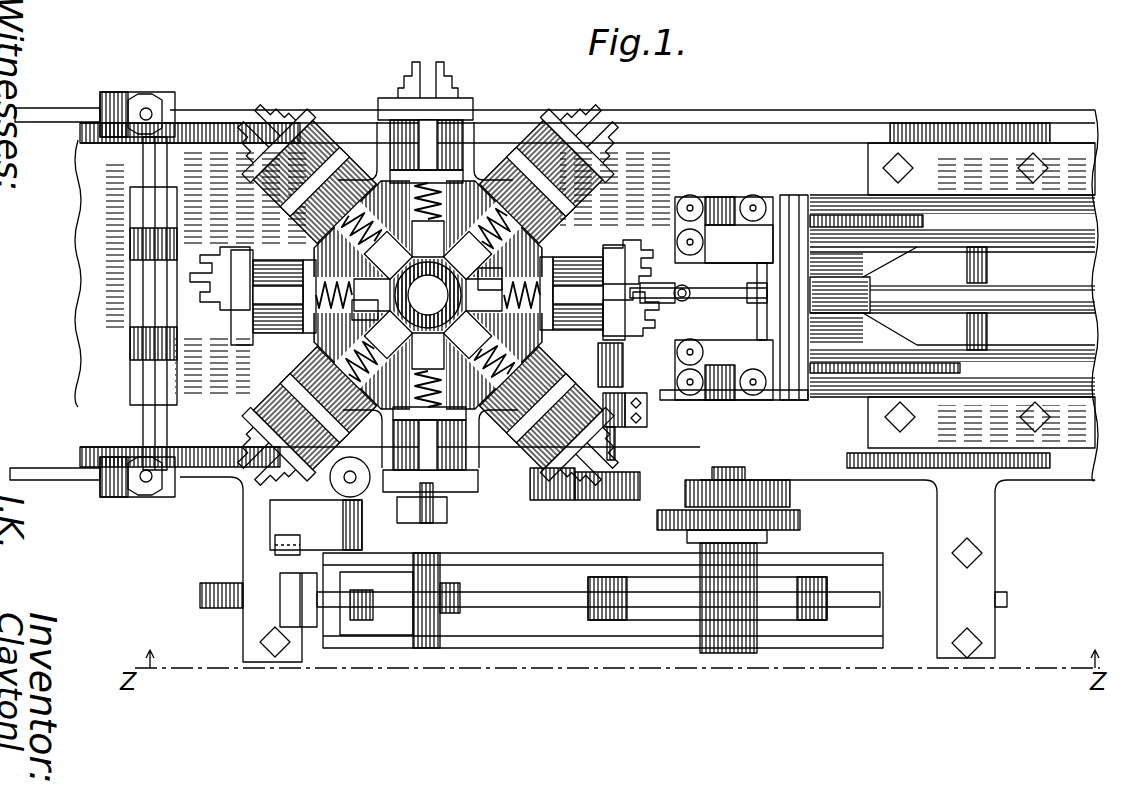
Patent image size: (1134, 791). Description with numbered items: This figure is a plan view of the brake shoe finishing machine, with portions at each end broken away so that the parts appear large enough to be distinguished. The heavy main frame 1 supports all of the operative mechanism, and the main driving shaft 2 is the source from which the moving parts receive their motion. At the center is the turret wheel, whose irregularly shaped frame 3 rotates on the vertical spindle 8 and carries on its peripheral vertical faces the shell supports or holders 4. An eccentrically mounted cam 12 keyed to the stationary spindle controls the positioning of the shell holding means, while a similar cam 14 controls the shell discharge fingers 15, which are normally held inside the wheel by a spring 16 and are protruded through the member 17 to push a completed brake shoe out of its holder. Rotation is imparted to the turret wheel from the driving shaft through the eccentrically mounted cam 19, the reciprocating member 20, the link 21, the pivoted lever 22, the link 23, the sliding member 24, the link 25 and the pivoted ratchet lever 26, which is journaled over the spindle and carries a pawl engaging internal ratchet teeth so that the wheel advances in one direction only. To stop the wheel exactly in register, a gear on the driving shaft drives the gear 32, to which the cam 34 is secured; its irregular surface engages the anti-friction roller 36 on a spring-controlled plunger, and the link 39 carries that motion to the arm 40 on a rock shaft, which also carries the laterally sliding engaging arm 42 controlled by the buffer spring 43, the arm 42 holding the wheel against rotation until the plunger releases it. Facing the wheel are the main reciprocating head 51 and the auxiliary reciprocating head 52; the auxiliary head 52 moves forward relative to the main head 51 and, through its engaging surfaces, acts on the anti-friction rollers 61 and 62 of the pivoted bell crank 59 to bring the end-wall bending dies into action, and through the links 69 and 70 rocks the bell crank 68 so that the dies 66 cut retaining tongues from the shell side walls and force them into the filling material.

The main frame 1 is at (938, 128).
The main driving shaft 2 is at (735, 640).
The turret wheel main frame 3 is at (250, 192).
The shell supports or holders 4 is at (290, 128).
The vertical spindle or axis 8 is at (428, 295).
The eccentrically mounted cam 12 is at (490, 278).
The eccentrically mounted cam 14 is at (445, 335).
The shell discharge fingers 15 is at (262, 295).
The spring 16 is at (420, 392).
The member 17 is at (365, 312).
The eccentrically mounted cam 19 is at (672, 605).
The reciprocating member 20 is at (490, 640).
The link 21 is at (360, 600).
The pivoted lever 22 is at (300, 600).
The link 23 is at (275, 542).
The sliding member 24 is at (362, 486).
The link 25 is at (415, 520).
The pivoted ratchet lever 26 is at (285, 505).
The gear 32 is at (800, 520).
The cam 34 is at (715, 490).
The anti-friction roller 36 is at (710, 472).
The link 39 is at (600, 500).
The arm 40 is at (560, 500).
The engaging arm 42 is at (598, 360).
The buffer spring 43 is at (614, 393).
The main reciprocating head 51 is at (925, 222).
The auxiliary reciprocating head 52 is at (788, 197).
The pivoted bell crank 59 is at (722, 286).
The anti-friction roller 61 is at (755, 305).
The anti-friction roller 62 is at (670, 232).
The dies 66 is at (640, 272).
The bell crank 68 is at (668, 350).
The link 69 is at (732, 200).
The link 70 is at (752, 396).